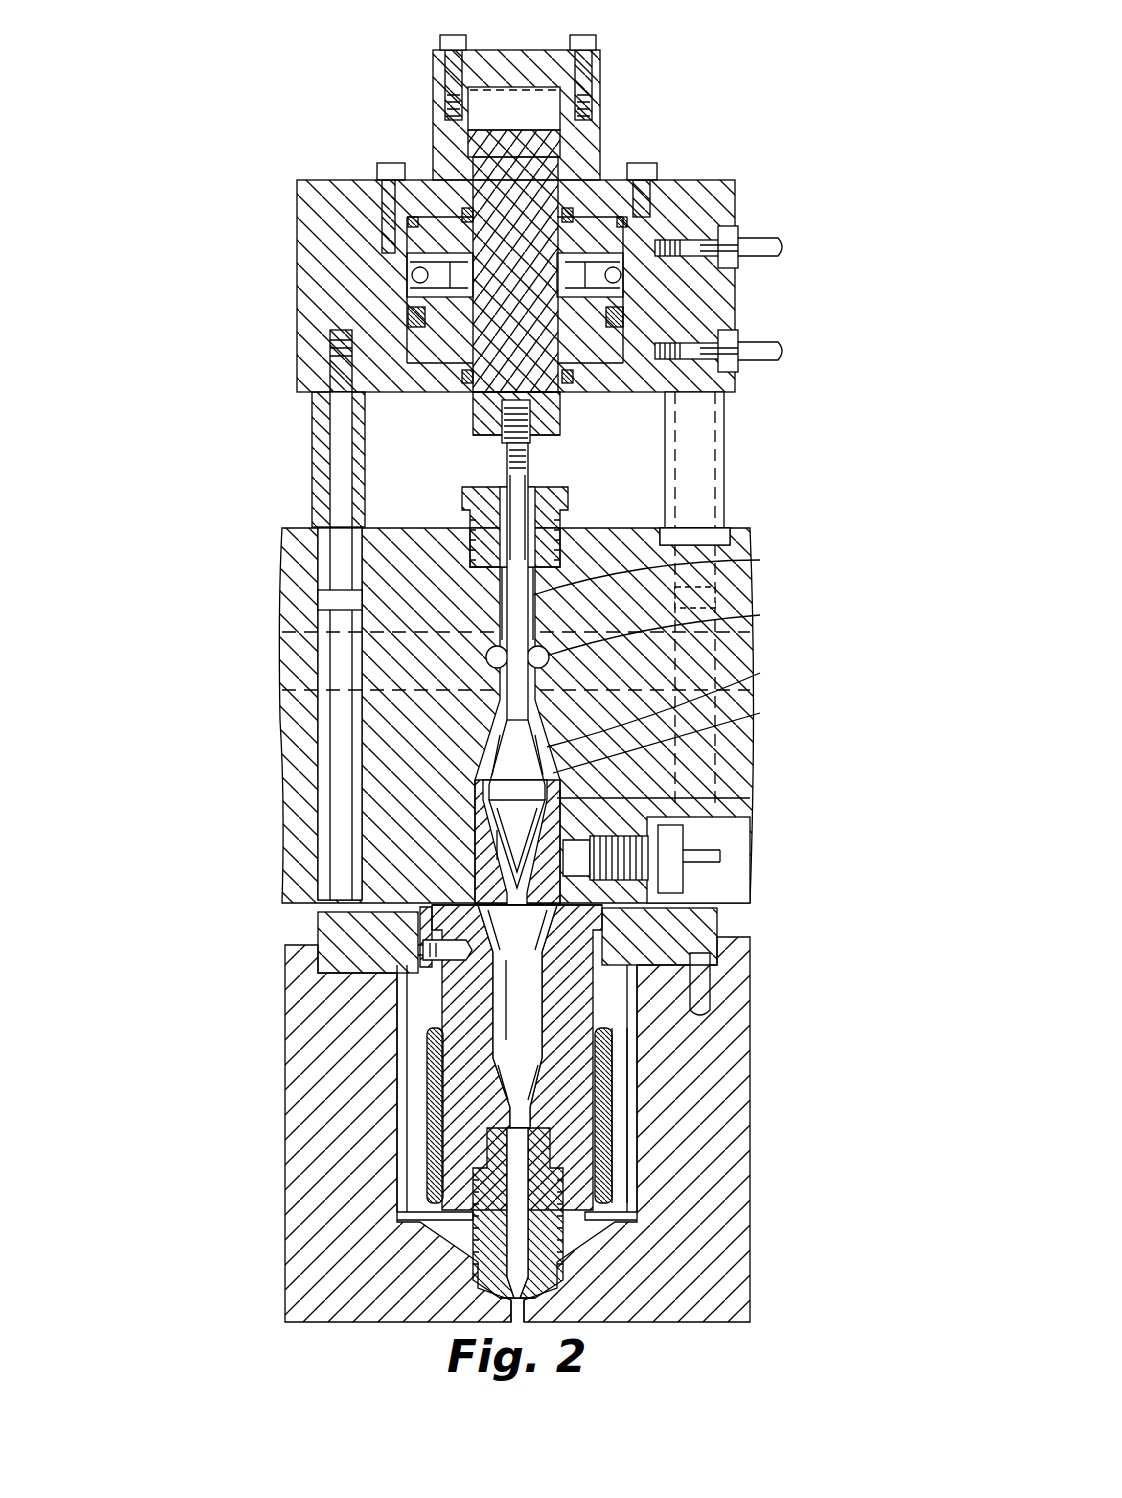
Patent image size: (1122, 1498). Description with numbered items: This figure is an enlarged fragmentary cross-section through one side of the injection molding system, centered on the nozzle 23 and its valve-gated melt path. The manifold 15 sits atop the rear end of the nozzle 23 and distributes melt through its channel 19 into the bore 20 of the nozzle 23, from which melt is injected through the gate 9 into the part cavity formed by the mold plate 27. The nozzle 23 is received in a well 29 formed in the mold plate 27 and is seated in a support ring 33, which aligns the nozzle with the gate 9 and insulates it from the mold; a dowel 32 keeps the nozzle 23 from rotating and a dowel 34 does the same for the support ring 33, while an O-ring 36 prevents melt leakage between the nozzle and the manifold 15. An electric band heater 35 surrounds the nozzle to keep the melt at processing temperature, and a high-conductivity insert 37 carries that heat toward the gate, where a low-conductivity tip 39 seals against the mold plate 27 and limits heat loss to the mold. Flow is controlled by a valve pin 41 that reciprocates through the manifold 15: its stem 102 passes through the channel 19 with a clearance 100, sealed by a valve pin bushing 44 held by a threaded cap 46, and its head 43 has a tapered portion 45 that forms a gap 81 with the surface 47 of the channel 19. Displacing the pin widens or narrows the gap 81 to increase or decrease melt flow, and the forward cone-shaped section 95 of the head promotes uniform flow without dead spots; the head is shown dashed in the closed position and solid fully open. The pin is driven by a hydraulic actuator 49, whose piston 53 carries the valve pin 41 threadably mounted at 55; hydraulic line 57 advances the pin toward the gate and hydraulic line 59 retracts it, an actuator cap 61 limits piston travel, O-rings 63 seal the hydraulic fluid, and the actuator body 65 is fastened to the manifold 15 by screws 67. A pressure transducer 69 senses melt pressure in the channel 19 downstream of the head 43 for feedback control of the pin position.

The gate 9 is at (513, 1327).
The manifold 15 is at (752, 765).
The channel 19 is at (548, 660).
The bore 20 is at (517, 1012).
The nozzle 23 is at (575, 1060).
The mold plate 27 is at (740, 1192).
The well 29 is at (625, 1160).
The dowel 32 is at (437, 952).
The support ring 33 is at (665, 935).
The dowel 34 is at (707, 990).
The heater 35 is at (612, 1097).
The O-ring 36 is at (497, 880).
The insert 37 is at (540, 1228).
The tip 39 is at (560, 1283).
The valve pin 41 is at (535, 599).
The head 43 is at (560, 800).
The valve pin bushing 44 is at (533, 474).
The tapered portion 45 is at (492, 780).
The cap 46 is at (567, 498).
The surface 47 is at (560, 765).
The actuator 49 is at (632, 129).
The piston 53 is at (515, 172).
The threaded mounting 55 is at (531, 414).
The hydraulic line 57 is at (785, 246).
The hydraulic line 59 is at (785, 351).
The actuator cap 61 is at (602, 120).
The O-rings 63 is at (413, 215).
The actuator body 65 is at (730, 183).
The screws 67 is at (333, 445).
The pressure transducer 69 is at (690, 857).
The gap 81 is at (552, 715).
The forward cone shaped section 95 is at (505, 815).
The clearance 100 is at (465, 690).
The stem 102 is at (510, 485).